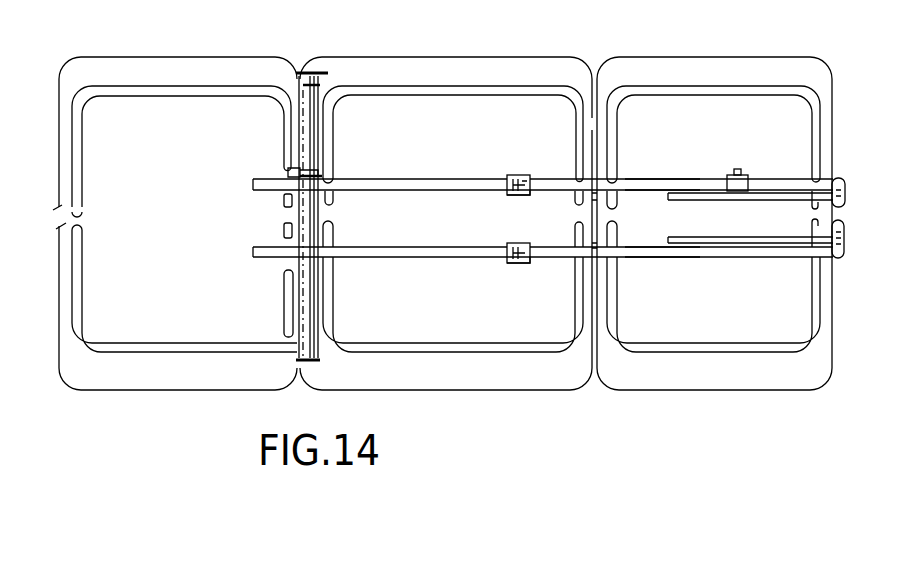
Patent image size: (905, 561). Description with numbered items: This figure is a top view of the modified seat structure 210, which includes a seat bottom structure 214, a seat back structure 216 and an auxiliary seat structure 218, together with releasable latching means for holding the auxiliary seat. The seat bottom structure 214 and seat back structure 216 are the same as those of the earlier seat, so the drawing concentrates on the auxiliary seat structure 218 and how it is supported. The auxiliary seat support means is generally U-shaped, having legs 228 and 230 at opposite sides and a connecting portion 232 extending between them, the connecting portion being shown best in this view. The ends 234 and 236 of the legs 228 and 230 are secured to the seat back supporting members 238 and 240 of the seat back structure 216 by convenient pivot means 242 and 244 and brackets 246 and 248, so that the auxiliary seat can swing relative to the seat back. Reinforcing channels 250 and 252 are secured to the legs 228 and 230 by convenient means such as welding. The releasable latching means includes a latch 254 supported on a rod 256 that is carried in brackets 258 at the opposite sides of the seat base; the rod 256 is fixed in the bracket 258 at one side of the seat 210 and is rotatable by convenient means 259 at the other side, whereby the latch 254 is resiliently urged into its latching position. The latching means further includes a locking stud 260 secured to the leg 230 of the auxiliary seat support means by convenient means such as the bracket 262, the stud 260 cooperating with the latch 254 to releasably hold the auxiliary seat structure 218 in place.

The modified seat structure 210 is at (503, 408).
The seat bottom structure 214 is at (193, 57).
The seat back structure 216 is at (412, 57).
The auxiliary seat structure 218 is at (695, 57).
The leg 228 is at (637, 259).
The leg 230 is at (640, 178).
The connecting portion 232 is at (832, 238).
The end of leg 234 is at (562, 258).
The end of leg 236 is at (552, 178).
The seat back supporting member 238 is at (414, 258).
The seat back supporting member 240 is at (410, 179).
The pivot means 242 is at (507, 259).
The pivot means 244 is at (506, 193).
The bracket 246 is at (515, 243).
The bracket 248 is at (507, 181).
The reinforcing channel 250 is at (695, 237).
The reinforcing channel 252 is at (710, 198).
The latch 254 is at (310, 173).
The rod 256 is at (318, 322).
The bracket 258 is at (318, 361).
The rotating means 259 is at (297, 72).
The locking stud 260 is at (738, 172).
The bracket 262 is at (750, 188).